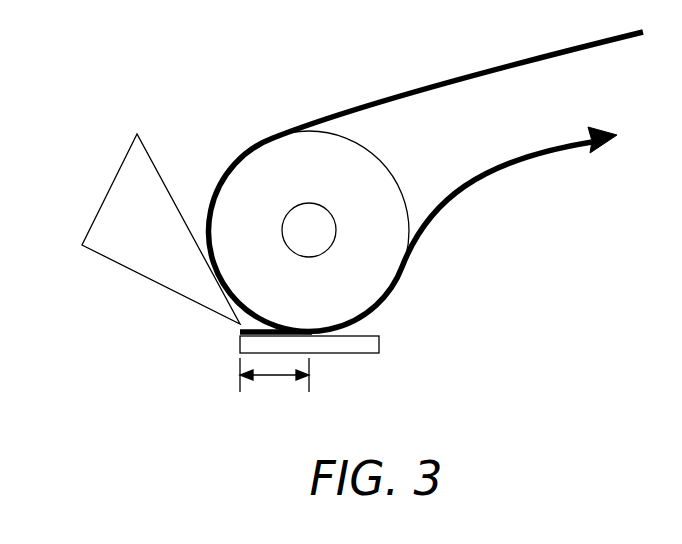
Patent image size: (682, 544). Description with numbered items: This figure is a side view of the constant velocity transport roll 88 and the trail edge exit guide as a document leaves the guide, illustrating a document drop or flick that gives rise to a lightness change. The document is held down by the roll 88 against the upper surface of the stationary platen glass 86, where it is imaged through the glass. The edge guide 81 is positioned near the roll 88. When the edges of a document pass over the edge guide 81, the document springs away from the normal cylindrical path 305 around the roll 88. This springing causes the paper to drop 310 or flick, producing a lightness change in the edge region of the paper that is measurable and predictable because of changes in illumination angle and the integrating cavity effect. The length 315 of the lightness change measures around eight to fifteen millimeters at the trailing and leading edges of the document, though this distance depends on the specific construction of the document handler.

The normal cylindrical path 305 is at (450, 72).
The constant velocity transport (CVT) roll 88 is at (242, 151).
The edge guide 81 is at (82, 245).
The drop 310 is at (232, 332).
The platen glass 86 is at (353, 355).
The length 315 is at (275, 377).